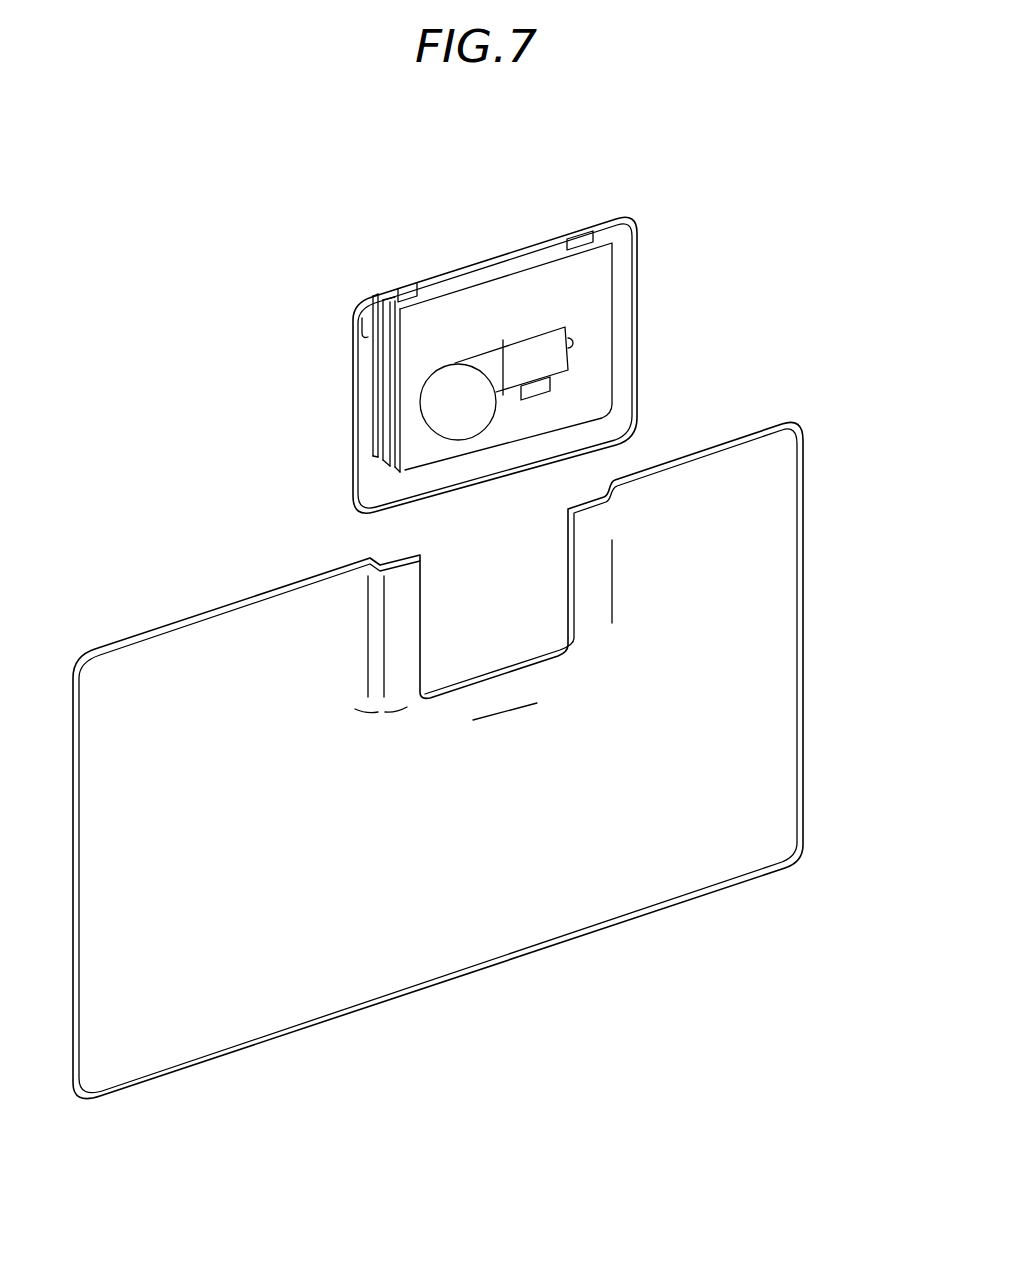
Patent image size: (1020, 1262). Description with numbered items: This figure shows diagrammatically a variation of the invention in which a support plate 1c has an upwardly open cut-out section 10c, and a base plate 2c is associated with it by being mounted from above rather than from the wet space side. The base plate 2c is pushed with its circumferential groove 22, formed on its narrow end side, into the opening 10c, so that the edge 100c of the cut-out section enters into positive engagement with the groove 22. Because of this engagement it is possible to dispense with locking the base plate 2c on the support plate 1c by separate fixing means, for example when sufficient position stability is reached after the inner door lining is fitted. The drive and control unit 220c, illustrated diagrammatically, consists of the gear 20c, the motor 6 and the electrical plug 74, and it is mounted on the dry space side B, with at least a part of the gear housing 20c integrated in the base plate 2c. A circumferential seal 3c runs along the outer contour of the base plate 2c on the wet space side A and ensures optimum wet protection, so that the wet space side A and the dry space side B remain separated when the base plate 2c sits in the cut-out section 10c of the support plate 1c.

The support plate 1c is at (757, 668).
The cut-out section 10c is at (507, 608).
The edge 100c is at (424, 633).
The base plate 2c is at (487, 313).
The circumferential seal 3c is at (362, 306).
The circumferential groove 22 is at (405, 300).
The drive and control unit 220c is at (509, 338).
The motor 6 is at (550, 363).
The electrical plug 74 is at (552, 383).
The gear 20c is at (462, 422).
The wet space side A is at (92, 647).
The dry space side B is at (738, 809).